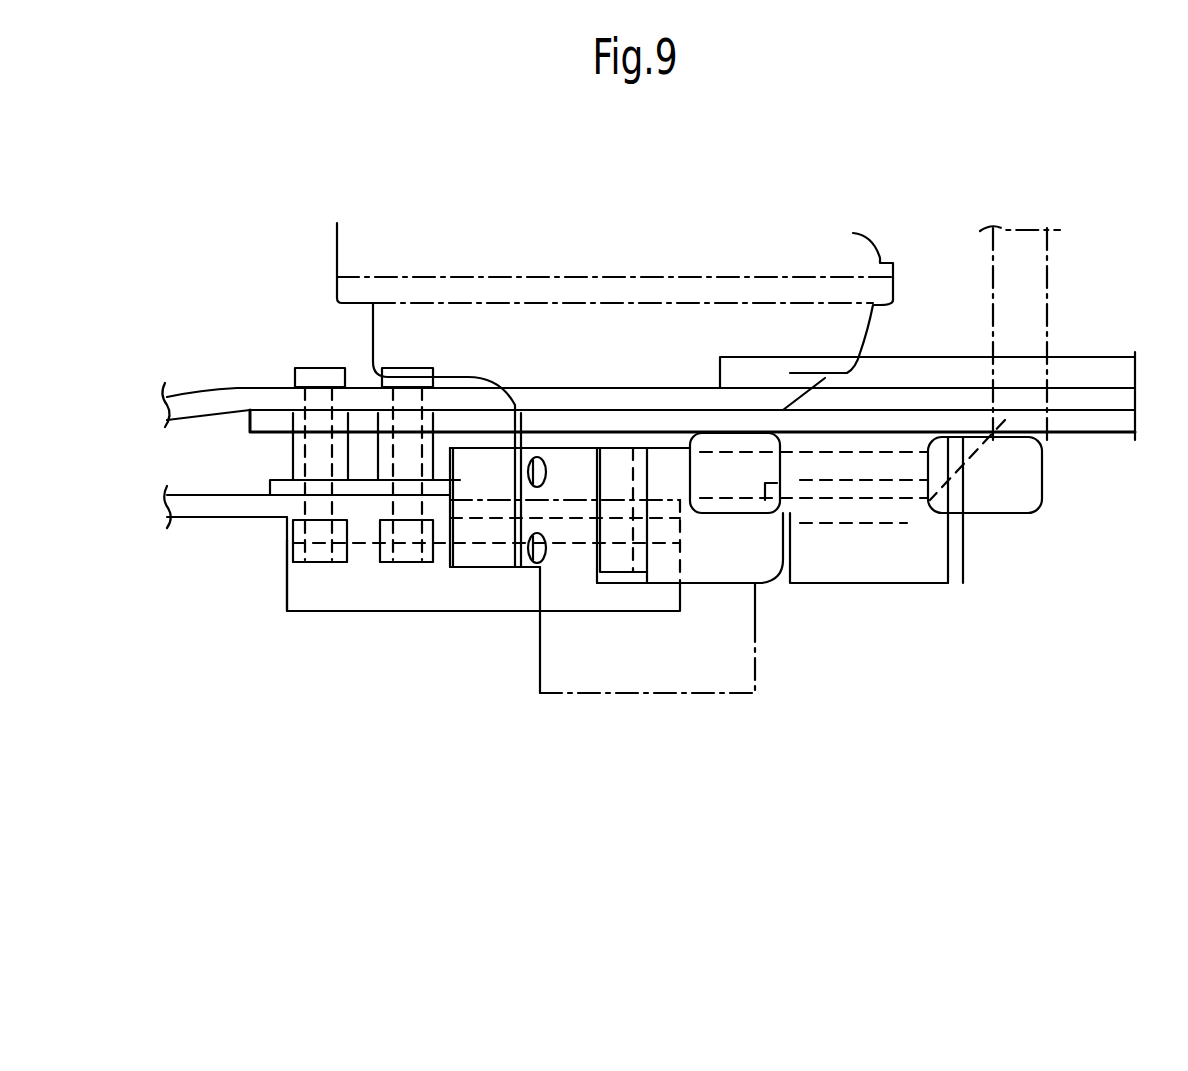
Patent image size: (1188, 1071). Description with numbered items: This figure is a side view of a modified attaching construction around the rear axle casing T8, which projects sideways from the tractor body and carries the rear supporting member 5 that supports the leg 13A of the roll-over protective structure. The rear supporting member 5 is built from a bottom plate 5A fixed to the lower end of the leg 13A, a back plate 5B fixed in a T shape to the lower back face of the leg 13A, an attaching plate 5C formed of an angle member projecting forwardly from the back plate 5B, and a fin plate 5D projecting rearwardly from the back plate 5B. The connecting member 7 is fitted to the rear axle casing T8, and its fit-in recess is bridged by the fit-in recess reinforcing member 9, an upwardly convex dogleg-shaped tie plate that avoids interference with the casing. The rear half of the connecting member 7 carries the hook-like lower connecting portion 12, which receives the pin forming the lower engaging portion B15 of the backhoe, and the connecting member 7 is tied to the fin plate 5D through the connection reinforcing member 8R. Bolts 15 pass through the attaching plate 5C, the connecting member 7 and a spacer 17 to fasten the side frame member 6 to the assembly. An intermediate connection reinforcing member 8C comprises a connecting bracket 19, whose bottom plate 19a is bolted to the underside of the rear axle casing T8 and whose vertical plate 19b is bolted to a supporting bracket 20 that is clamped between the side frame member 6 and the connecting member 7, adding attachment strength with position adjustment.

The rear supporting member 5 is at (265, 637).
The bottom plate 5A is at (713, 583).
The back plate 5B is at (958, 570).
The attaching plate 5C is at (320, 593).
The fin plate 5D is at (860, 510).
The side frame member 6 is at (200, 510).
The connecting member 7 is at (635, 397).
The intermediate connection reinforcing member 8C is at (347, 838).
The connection reinforcing member 8R is at (860, 510).
The fit-in recess reinforcing member 9 is at (550, 417).
The lower connecting portion 12 is at (1093, 357).
The leg 13A is at (1017, 503).
The bolt 15 is at (390, 372).
The spacer 17 is at (380, 440).
The connecting bracket 19 is at (553, 655).
The bottom plate 19a is at (483, 557).
The vertical plate 19b is at (433, 547).
The supporting bracket 20 is at (363, 490).
The lower engaging portion B15 is at (992, 297).
The rear axle casing T8 is at (753, 620).